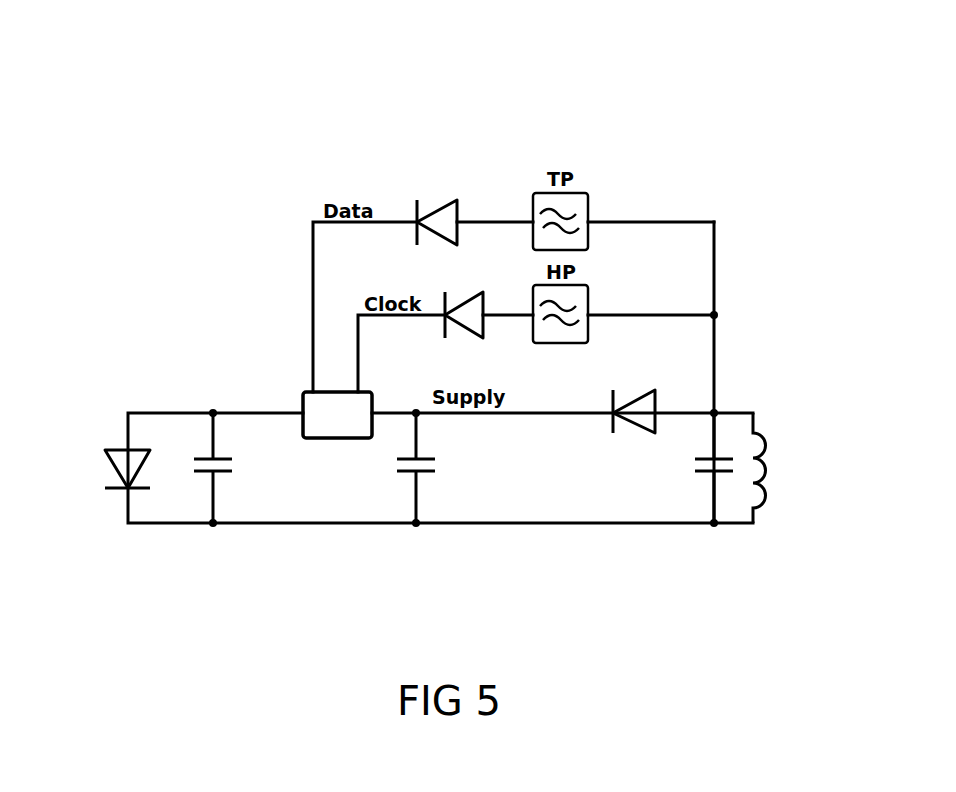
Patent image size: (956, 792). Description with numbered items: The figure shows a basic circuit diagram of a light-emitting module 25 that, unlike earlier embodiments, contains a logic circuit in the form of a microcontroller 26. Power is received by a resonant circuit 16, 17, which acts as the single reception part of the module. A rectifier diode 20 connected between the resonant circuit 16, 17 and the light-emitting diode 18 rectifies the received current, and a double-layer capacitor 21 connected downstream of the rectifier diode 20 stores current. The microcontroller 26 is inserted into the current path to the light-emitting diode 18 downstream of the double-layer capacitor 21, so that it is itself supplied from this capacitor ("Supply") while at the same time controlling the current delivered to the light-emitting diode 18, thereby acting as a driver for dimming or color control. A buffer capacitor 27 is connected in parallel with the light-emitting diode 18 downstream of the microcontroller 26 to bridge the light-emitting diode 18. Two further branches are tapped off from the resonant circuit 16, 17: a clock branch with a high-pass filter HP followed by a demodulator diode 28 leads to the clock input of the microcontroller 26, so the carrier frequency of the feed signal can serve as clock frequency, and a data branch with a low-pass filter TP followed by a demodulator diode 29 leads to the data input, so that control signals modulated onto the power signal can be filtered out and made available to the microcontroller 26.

The light-emitting module 25 is at (707, 132).
The demodulator diode 29 is at (447, 200).
The demodulator diode 28 is at (472, 294).
The rectifier diode 20 is at (643, 393).
The light-emitting diode 18 is at (107, 451).
The buffer capacitor 27 is at (236, 466).
The microcontroller 26 is at (323, 438).
The double-layer capacitor 21 is at (438, 466).
The resonant circuit 16 is at (693, 467).
The resonant circuit 17 is at (768, 462).